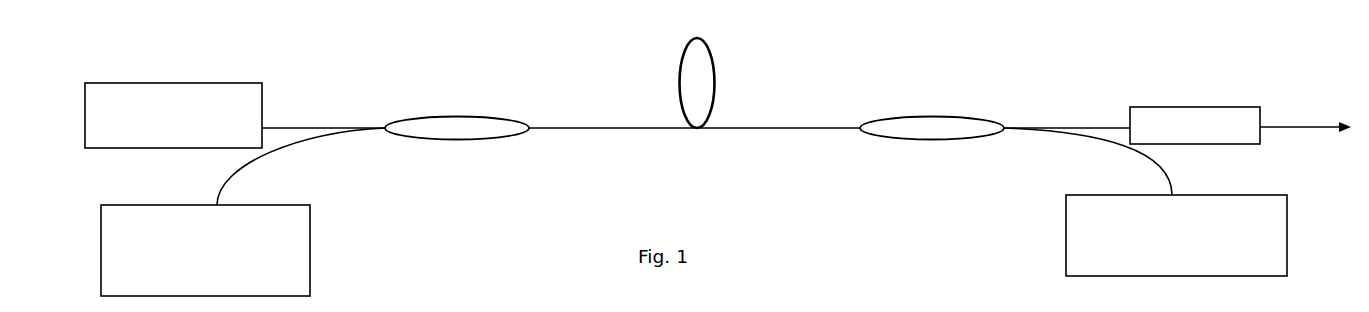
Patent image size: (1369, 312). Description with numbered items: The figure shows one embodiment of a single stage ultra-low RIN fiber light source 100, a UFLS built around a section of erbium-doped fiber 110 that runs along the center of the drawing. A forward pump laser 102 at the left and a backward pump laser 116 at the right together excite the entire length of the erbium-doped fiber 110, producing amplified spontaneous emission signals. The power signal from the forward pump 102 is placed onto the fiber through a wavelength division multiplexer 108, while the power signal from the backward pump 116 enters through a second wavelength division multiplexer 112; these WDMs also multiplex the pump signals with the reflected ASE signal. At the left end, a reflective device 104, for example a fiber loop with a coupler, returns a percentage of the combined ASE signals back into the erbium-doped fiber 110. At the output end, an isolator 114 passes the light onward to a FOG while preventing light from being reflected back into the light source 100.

The single stage ultra-low RIN fiber light source 100 is at (124, 52).
The forward pump laser 102 is at (307, 237).
The reflective device 104 is at (120, 92).
The wavelength division multiplexer 108 is at (502, 122).
The erbium-doped fiber 110 is at (713, 70).
The wavelength division multiplexer 112 is at (962, 122).
The isolator 114 is at (1248, 112).
The backward pump laser 116 is at (1280, 208).